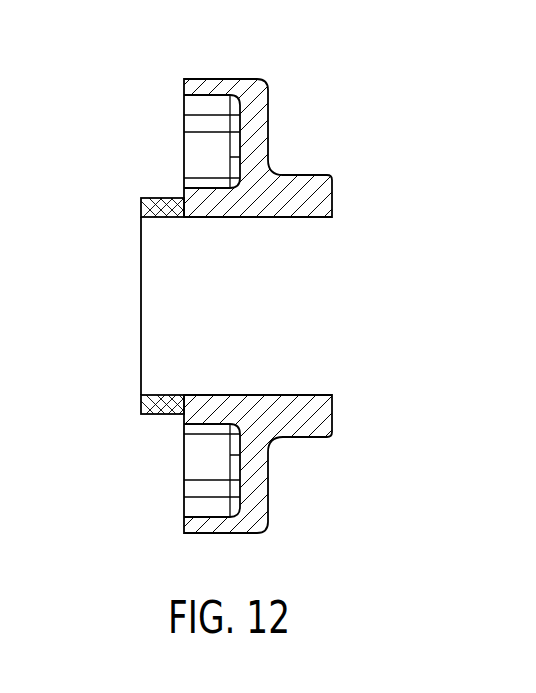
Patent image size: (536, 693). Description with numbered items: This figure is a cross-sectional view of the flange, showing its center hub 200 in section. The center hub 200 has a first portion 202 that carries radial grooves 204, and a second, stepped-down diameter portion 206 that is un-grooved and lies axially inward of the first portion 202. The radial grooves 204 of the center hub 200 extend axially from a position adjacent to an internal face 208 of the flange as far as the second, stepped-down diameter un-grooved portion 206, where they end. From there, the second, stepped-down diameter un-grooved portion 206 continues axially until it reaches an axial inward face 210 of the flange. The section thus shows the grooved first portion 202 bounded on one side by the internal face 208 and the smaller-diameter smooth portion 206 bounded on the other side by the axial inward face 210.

The center hub 200 is at (182, 416).
The first portion 202 is at (228, 430).
The grooves 204 is at (193, 184).
The second, stepped-down diameter portion 206 is at (152, 416).
The internal face 208 is at (240, 157).
The axial inward face 210 is at (141, 208).